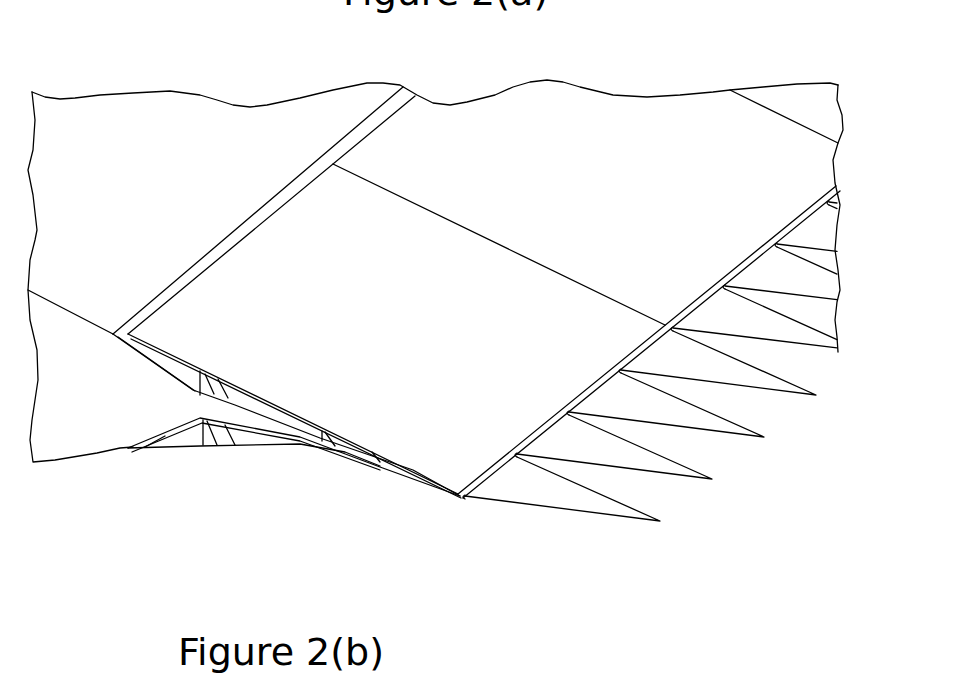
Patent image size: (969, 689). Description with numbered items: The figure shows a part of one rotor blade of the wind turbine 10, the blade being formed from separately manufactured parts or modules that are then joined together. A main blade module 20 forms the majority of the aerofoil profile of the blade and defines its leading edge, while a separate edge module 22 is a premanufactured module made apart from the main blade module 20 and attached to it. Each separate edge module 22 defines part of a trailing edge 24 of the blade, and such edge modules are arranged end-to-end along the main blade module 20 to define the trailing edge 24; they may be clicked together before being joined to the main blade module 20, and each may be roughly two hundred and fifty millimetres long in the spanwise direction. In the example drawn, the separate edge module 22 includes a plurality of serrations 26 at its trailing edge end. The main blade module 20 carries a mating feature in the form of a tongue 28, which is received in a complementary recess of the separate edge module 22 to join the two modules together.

The wind turbine 10 is at (214, 82).
The main blade module 20 is at (97, 456).
The separate edge module 22 is at (383, 472).
The trailing edge 24 is at (490, 521).
The serrations 26 is at (673, 477).
The tongue 28 is at (224, 418).